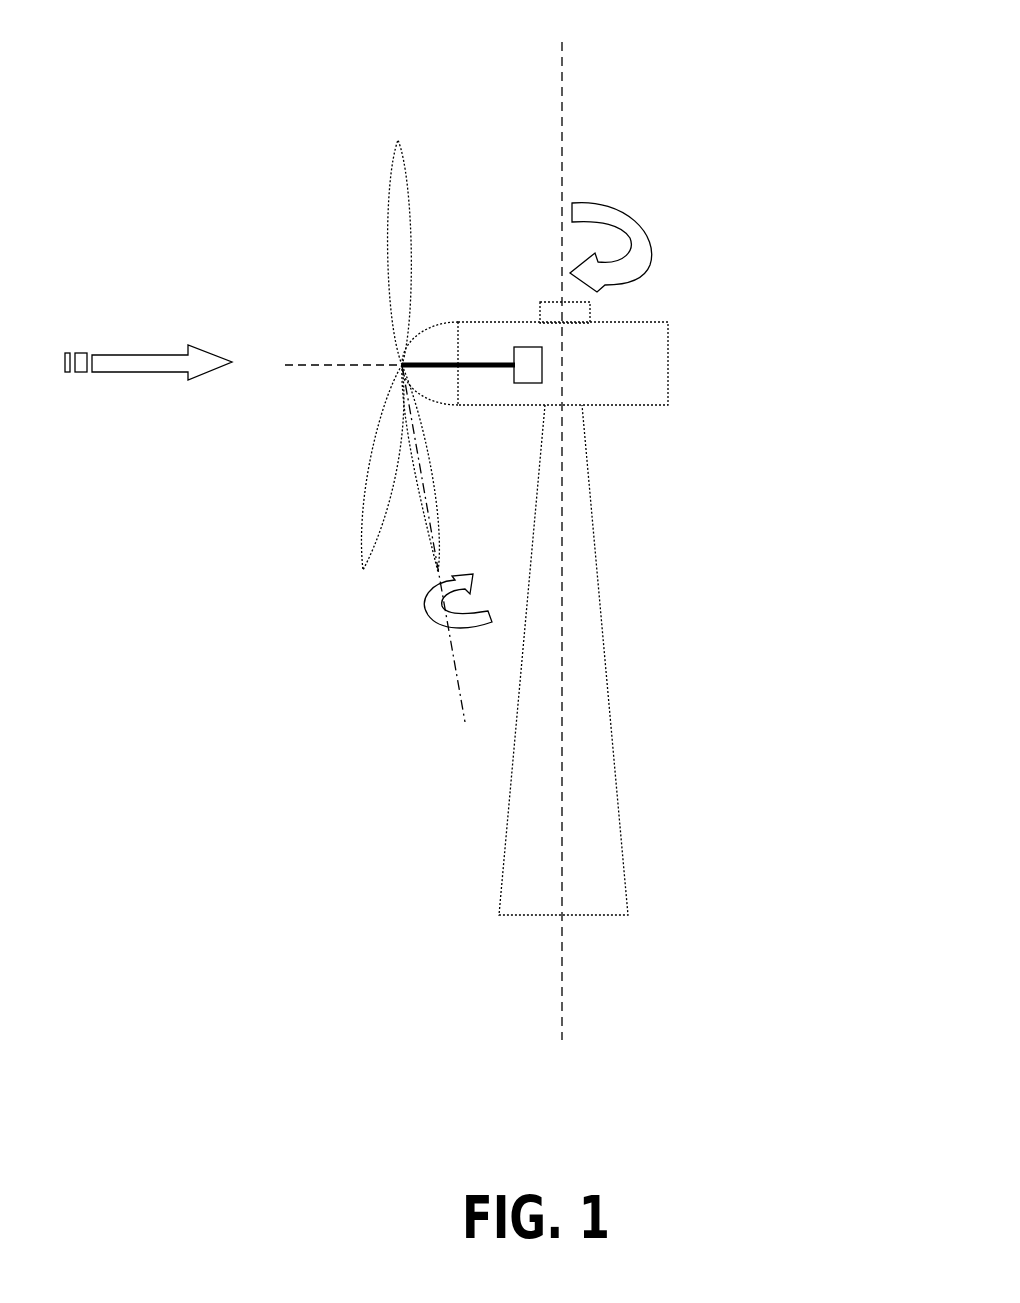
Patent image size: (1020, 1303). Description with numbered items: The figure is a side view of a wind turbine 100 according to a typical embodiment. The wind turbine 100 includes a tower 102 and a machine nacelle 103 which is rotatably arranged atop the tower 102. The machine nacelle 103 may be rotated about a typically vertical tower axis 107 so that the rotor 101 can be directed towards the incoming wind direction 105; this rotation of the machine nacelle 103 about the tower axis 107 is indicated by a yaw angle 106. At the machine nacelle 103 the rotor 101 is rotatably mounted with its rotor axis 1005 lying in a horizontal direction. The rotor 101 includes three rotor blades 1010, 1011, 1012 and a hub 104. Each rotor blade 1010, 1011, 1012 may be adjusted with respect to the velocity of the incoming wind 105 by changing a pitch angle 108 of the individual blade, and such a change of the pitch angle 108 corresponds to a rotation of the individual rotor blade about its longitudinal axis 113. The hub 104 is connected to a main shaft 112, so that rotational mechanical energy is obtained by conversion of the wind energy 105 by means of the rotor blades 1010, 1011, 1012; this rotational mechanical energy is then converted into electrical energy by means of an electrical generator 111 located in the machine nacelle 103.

The wind turbine 100 is at (735, 106).
The rotor 101 is at (306, 181).
The tower 102 is at (607, 690).
The machine nacelle 103 is at (670, 367).
The hub 104 is at (450, 322).
The incoming wind direction 105 is at (142, 372).
The yaw angle 106 is at (647, 242).
The tower axis 107 is at (560, 93).
The pitch angle 108 is at (425, 622).
The electrical generator 111 is at (528, 384).
The main shaft 112 is at (500, 368).
The longitudinal axis 113 is at (455, 678).
The rotor axis 1005 is at (327, 372).
The rotor blade 1010 is at (387, 270).
The rotor blade 1011 is at (368, 522).
The rotor blade 1012 is at (408, 477).